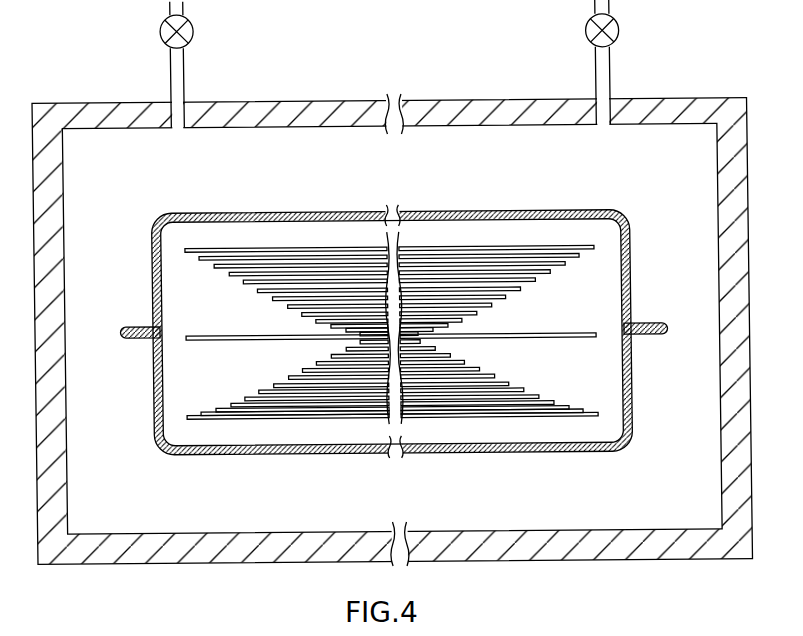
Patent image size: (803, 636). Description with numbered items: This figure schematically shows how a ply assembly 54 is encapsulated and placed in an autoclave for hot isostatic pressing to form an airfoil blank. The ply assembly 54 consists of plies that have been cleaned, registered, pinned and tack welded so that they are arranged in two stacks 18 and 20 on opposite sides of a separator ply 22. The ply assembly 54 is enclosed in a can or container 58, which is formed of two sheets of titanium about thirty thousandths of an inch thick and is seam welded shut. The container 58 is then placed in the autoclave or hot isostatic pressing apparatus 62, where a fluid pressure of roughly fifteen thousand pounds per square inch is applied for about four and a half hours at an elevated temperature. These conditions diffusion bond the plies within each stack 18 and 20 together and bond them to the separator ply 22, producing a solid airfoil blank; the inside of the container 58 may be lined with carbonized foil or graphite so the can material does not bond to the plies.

The autoclave or hot isostatic pressing apparatus 62 is at (98, 90).
The can or container 58 is at (608, 204).
The ply assembly 54 is at (181, 402).
The stack of plies 18 is at (465, 240).
The stack of plies 20 is at (462, 432).
The separator ply 22 is at (583, 333).